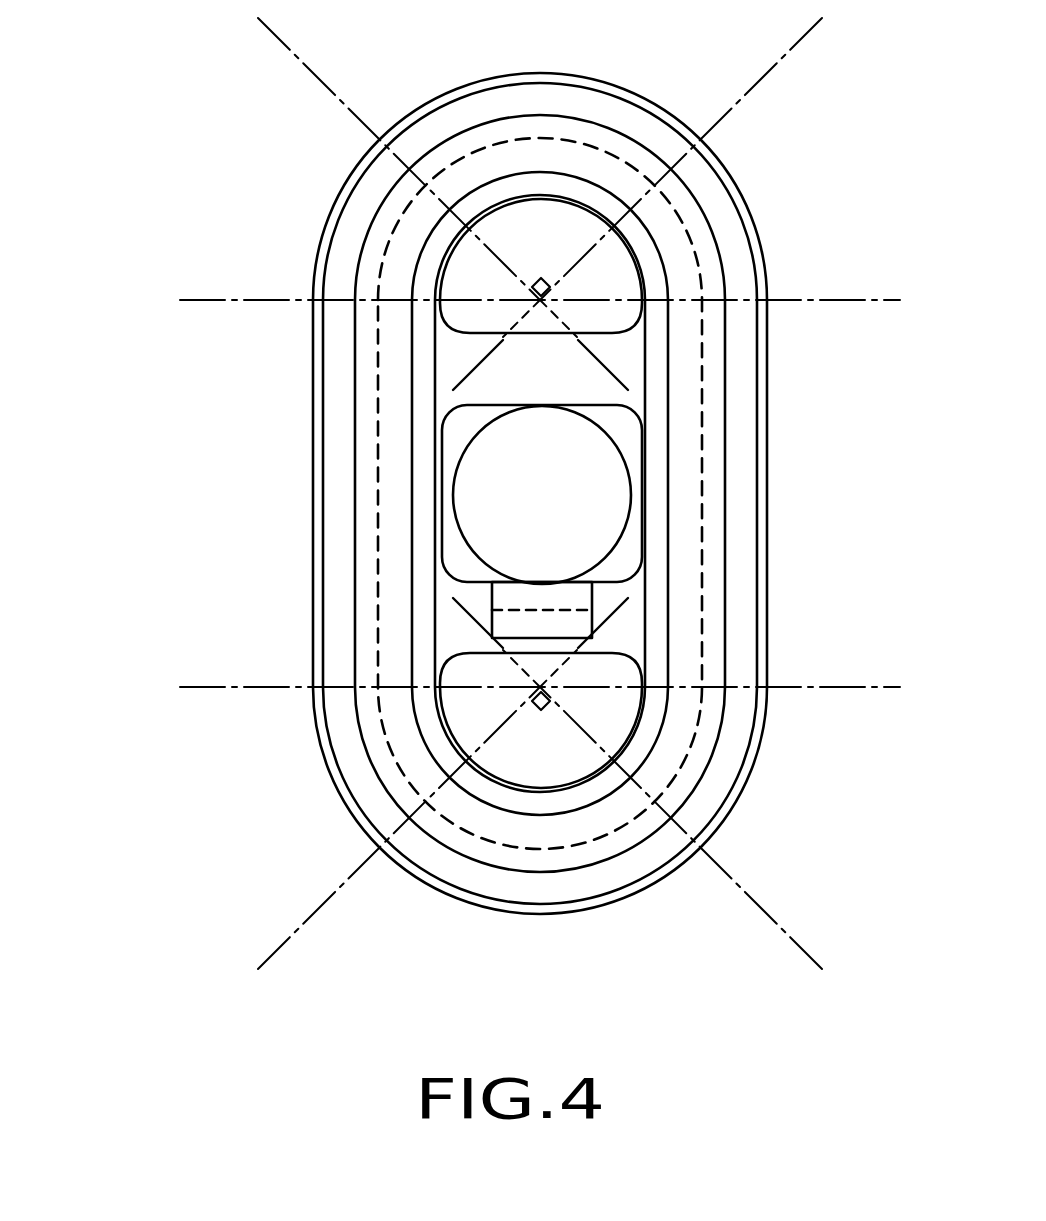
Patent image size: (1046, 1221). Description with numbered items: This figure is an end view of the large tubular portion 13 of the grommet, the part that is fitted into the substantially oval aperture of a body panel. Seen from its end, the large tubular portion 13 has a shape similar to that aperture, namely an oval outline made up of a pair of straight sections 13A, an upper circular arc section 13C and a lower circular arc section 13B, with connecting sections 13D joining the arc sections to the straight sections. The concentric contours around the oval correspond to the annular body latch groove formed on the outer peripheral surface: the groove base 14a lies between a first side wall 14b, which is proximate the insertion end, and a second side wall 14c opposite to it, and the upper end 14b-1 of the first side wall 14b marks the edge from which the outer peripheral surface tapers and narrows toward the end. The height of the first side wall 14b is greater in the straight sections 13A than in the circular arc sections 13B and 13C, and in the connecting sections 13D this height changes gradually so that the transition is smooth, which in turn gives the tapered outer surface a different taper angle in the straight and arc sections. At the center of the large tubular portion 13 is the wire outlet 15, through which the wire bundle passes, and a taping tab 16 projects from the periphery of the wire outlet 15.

The large tubular portion 13 is at (312, 328).
The straight sections 13A is at (275, 300).
The lower circular arc section 13B is at (700, 922).
The upper circular arc section 13C is at (700, 64).
The connecting sections 13D is at (368, 128).
The groove base 14a is at (378, 617).
The first side wall 14b is at (322, 698).
The upper end of first side wall 14b-1 is at (357, 602).
The second side wall 14c is at (340, 567).
The wire outlet 15 is at (627, 463).
The taping tab 16 is at (575, 598).